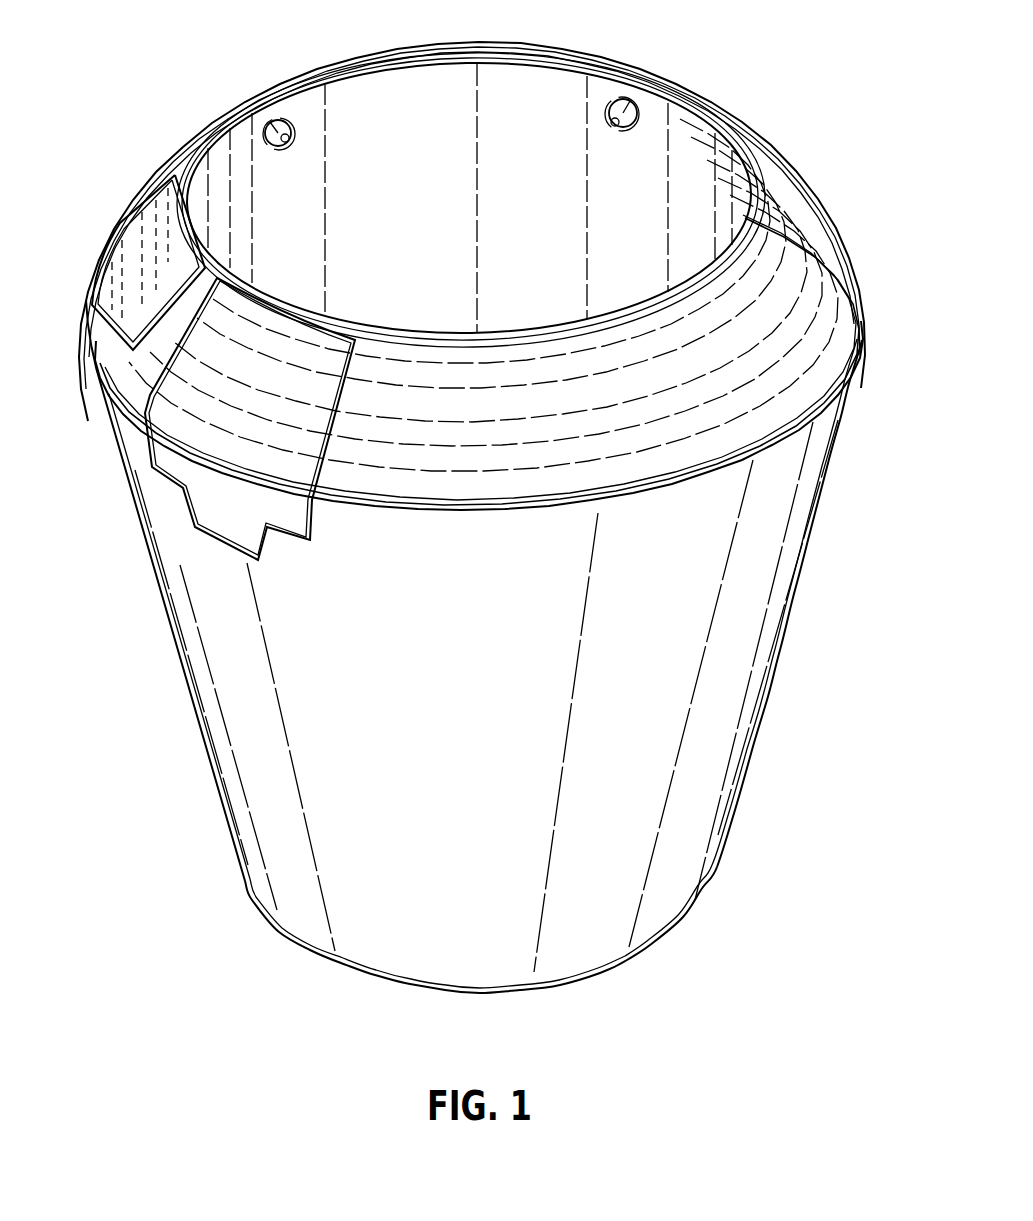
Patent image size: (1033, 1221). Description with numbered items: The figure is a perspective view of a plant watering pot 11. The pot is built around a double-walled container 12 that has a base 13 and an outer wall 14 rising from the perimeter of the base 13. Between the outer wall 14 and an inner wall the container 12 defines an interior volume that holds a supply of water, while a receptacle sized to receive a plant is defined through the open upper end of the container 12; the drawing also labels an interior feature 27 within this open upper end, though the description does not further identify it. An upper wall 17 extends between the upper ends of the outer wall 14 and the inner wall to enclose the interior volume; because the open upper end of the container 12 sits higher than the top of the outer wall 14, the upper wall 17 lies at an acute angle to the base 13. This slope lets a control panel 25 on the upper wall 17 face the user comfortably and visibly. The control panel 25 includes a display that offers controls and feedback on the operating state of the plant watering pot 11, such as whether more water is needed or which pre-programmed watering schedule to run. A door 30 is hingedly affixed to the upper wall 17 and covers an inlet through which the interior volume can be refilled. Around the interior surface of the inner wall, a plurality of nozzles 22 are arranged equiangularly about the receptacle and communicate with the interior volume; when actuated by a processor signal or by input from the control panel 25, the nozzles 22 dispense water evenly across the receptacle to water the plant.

The plant watering pot 11 is at (118, 85).
The double-walled container 12 is at (160, 705).
The base 13 is at (680, 918).
The outer wall 14 is at (745, 600).
The upper wall 17 is at (820, 258).
The plurality of nozzles 22 is at (277, 118).
The control panel 25 is at (150, 243).
The interior 27 is at (513, 107).
The door 30 is at (203, 387).